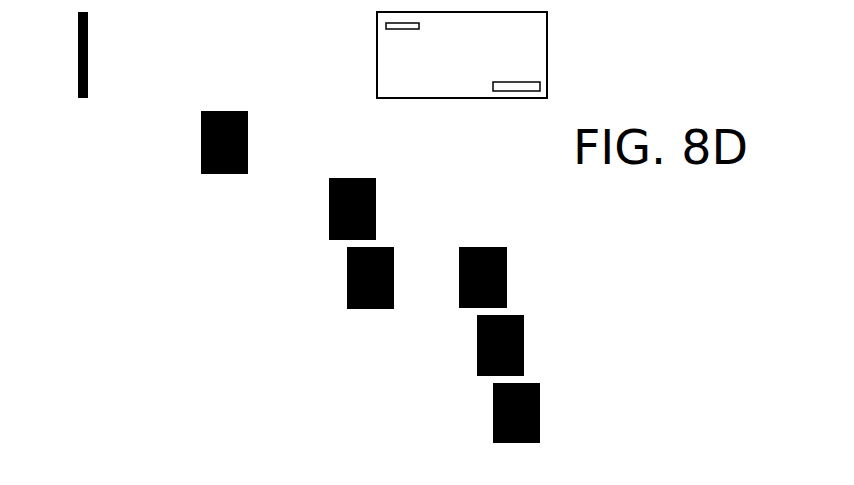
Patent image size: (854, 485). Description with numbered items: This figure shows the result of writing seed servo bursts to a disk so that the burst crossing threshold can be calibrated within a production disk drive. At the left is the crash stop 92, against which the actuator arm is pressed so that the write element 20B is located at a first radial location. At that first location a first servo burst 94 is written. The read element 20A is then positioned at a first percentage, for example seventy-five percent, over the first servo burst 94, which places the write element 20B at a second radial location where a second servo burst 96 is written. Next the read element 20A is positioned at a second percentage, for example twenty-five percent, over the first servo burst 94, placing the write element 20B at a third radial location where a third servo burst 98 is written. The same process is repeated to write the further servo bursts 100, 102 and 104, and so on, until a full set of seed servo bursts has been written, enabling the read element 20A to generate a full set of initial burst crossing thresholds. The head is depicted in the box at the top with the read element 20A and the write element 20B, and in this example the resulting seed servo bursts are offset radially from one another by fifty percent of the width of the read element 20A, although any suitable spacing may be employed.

The crash stop 92 is at (78, 52).
The first servo burst 94 is at (201, 140).
The second servo burst 96 is at (329, 210).
The third servo burst 98 is at (347, 276).
The servo burst 100 is at (507, 276).
The servo burst 102 is at (524, 342).
The servo burst 104 is at (540, 409).
The read element 20A is at (419, 26).
The write element 20B is at (493, 86).